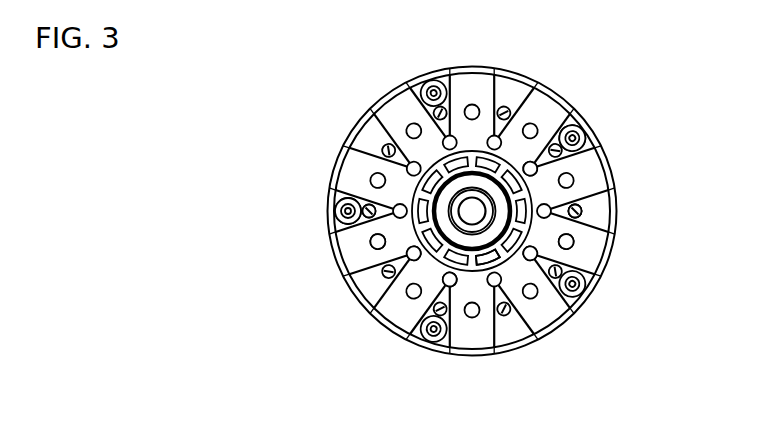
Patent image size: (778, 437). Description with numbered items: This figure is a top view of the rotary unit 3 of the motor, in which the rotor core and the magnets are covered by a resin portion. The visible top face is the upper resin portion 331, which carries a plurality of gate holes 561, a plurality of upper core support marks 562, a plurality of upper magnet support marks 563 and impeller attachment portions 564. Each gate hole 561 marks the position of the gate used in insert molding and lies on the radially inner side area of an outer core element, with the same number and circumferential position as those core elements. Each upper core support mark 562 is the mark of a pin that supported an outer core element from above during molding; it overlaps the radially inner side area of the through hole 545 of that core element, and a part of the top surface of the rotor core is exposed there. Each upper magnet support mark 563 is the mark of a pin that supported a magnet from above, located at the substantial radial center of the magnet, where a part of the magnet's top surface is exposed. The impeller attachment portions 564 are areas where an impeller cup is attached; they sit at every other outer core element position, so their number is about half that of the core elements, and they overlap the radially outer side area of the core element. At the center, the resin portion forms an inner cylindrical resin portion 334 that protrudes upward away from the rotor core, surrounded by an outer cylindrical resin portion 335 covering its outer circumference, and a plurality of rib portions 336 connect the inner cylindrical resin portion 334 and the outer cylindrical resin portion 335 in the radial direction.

The rotary unit 3 is at (322, 67).
The upper resin portion 331 is at (627, 46).
The inner cylindrical resin portion 334 is at (498, 258).
The outer cylindrical resin portion 335 is at (482, 261).
The rib portion 336 is at (448, 273).
The through hole 545 is at (590, 203).
The gate hole 561 is at (538, 168).
The upper core support mark 562 is at (590, 210).
The upper magnet support mark 563 is at (574, 243).
The impeller attachment portion 564 is at (584, 128).